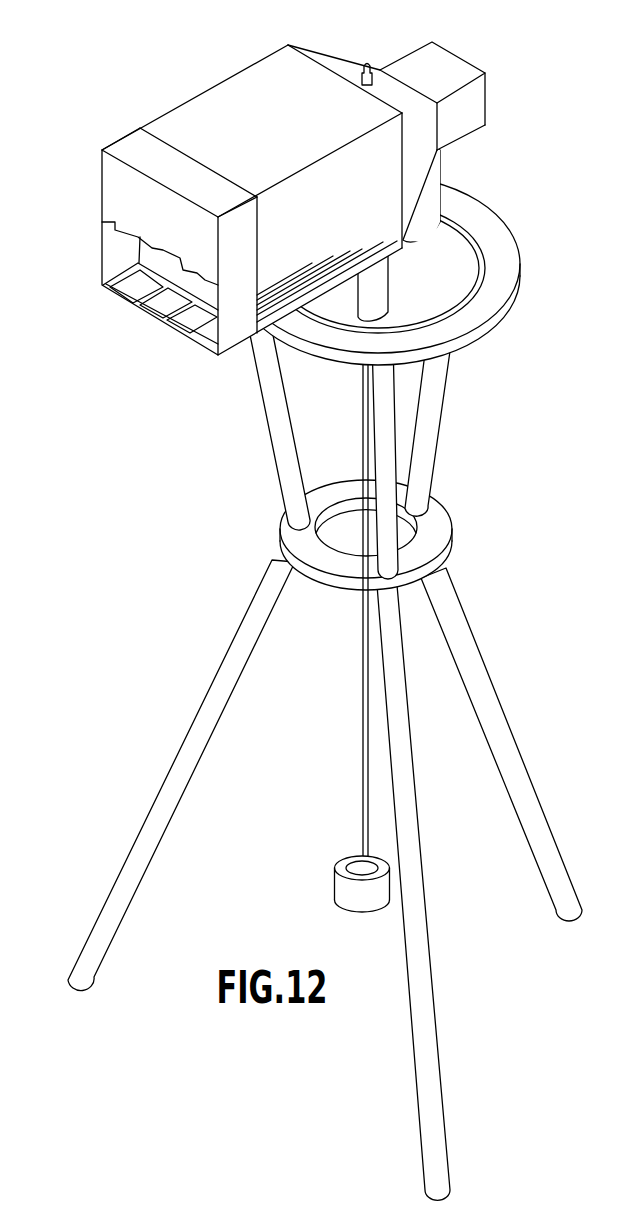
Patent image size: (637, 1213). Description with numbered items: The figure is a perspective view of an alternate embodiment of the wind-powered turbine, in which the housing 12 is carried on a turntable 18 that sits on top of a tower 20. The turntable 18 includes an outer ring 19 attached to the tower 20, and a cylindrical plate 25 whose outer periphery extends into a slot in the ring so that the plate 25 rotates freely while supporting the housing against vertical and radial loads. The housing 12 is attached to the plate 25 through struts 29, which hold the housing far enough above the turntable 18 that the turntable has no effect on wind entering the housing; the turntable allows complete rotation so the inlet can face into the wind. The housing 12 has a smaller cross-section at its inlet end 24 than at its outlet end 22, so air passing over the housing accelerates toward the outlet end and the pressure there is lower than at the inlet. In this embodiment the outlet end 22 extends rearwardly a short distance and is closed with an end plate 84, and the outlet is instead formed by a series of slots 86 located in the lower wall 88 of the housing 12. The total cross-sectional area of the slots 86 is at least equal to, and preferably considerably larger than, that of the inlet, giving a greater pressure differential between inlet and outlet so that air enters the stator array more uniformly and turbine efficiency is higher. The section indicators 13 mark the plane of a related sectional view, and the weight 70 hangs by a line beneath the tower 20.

The housing 12 is at (186, 98).
The section line 13- 13 is at (470, 23).
The turntable 18 is at (418, 270).
The outer ring 19 is at (462, 314).
The tower 20 is at (510, 712).
The outlet end 22 is at (125, 137).
The inlet end 24 is at (480, 102).
The cylindrical plate 25 is at (462, 254).
The struts 29 is at (440, 172).
The plumb weight 70 is at (334, 881).
The end plate 84 is at (118, 198).
The slots 86 is at (181, 327).
The lower wall 88 is at (192, 277).